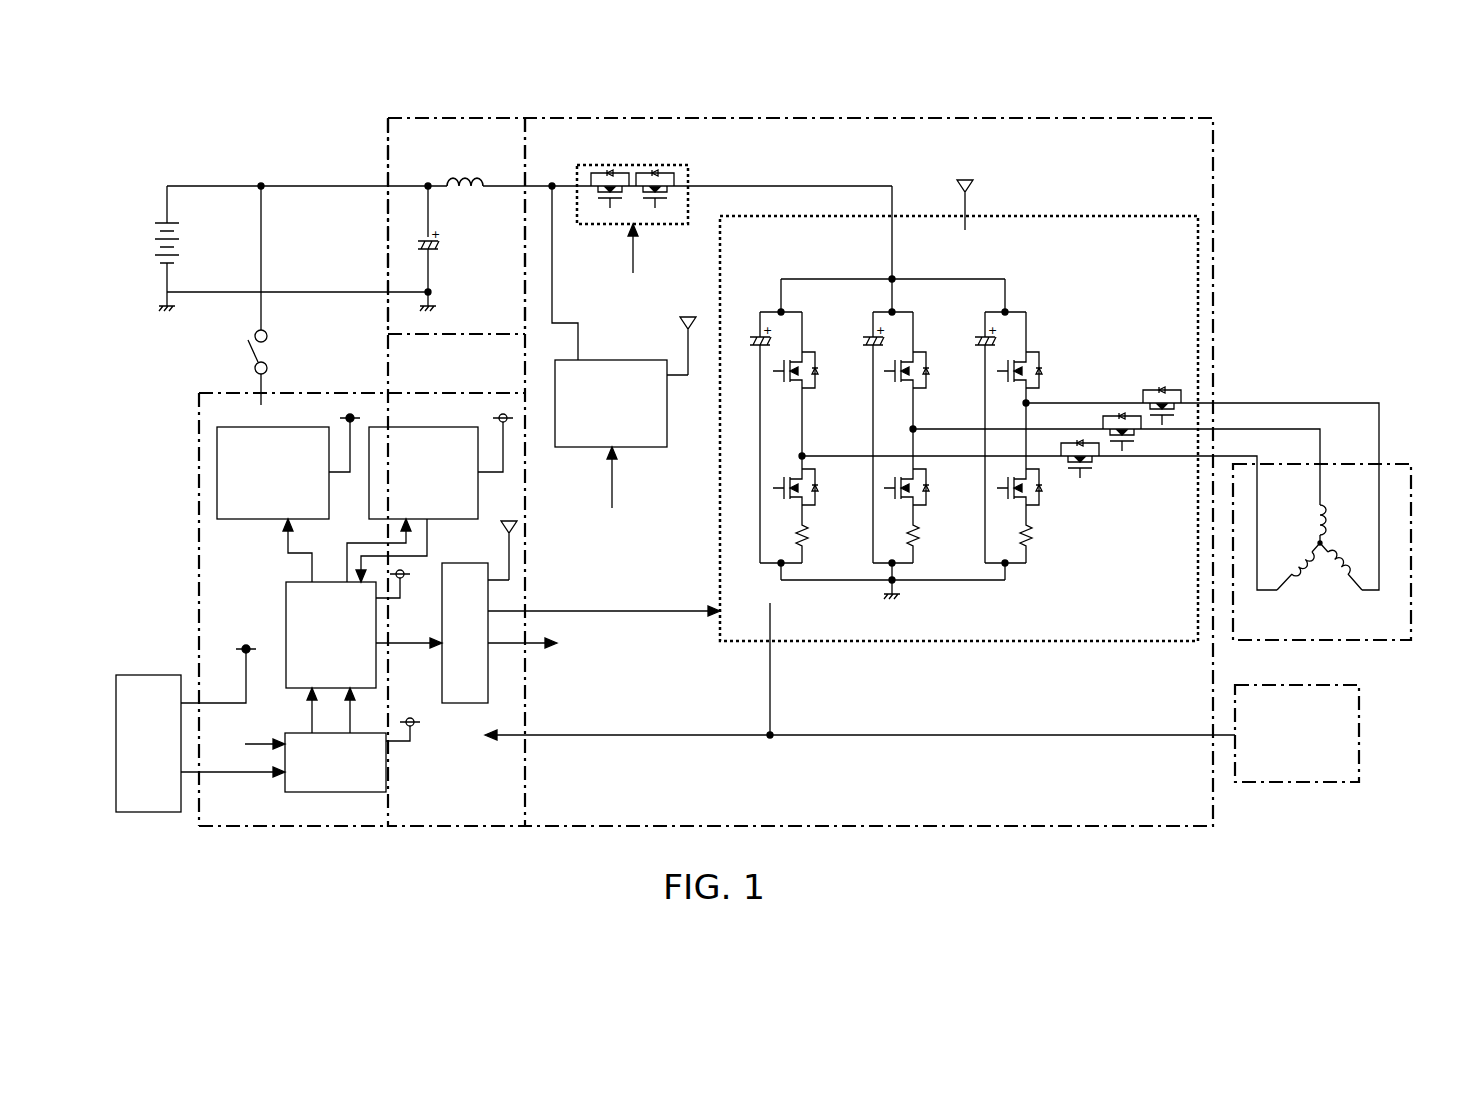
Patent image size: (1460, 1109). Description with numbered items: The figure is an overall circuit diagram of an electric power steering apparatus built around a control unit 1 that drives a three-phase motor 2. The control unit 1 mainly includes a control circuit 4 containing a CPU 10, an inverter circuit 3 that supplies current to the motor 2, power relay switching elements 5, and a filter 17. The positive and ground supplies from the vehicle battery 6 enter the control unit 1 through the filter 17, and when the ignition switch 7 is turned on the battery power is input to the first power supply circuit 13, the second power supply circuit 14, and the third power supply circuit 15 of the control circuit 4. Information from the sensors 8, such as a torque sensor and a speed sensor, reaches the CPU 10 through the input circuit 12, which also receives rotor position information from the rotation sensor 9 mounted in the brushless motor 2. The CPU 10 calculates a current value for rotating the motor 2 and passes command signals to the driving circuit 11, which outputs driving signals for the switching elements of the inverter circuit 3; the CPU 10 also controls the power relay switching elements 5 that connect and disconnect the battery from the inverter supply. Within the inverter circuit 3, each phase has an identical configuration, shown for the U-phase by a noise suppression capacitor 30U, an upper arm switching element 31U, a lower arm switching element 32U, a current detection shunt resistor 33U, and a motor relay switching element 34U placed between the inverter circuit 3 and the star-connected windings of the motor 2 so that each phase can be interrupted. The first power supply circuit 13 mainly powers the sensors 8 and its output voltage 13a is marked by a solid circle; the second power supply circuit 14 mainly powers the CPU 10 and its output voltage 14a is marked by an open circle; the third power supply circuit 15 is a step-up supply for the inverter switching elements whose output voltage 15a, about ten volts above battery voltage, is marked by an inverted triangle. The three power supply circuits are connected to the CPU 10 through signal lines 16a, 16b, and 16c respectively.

The control unit 1 is at (868, 118).
The motor 2 is at (1390, 465).
The inverter circuit 3 is at (1049, 445).
The control circuit 4 is at (402, 827).
The power relay switching elements 5 is at (667, 165).
The battery 6 is at (160, 215).
The ignition switch 7 is at (245, 366).
The sensors 8 is at (138, 675).
The rotation sensor 9 is at (1360, 735).
The CPU 10 is at (286, 612).
The driving circuit 11 is at (442, 670).
The input circuit 12 is at (386, 780).
The first power supply circuit 13 is at (255, 427).
The output voltage 13a is at (345, 418).
The second power supply circuit 14 is at (420, 427).
The output voltage 14a is at (498, 418).
The third power supply circuit 15 is at (592, 360).
The output voltage 15a is at (680, 318).
The signal line 16a is at (288, 553).
The signal line 16b is at (427, 556).
The signal line 16c is at (614, 503).
The filter 17 is at (447, 118).
The noise suppression capacitor 30U is at (753, 333).
The upper arm switching element 31U is at (800, 352).
The lower arm switching element 32U is at (812, 493).
The current detection shunt resistor 33U is at (800, 545).
The motor relay switching element 34U is at (1075, 482).